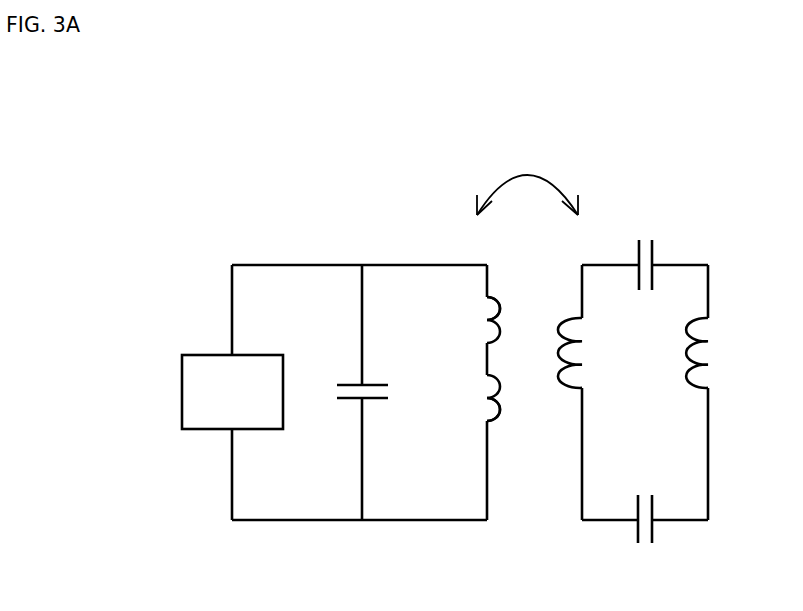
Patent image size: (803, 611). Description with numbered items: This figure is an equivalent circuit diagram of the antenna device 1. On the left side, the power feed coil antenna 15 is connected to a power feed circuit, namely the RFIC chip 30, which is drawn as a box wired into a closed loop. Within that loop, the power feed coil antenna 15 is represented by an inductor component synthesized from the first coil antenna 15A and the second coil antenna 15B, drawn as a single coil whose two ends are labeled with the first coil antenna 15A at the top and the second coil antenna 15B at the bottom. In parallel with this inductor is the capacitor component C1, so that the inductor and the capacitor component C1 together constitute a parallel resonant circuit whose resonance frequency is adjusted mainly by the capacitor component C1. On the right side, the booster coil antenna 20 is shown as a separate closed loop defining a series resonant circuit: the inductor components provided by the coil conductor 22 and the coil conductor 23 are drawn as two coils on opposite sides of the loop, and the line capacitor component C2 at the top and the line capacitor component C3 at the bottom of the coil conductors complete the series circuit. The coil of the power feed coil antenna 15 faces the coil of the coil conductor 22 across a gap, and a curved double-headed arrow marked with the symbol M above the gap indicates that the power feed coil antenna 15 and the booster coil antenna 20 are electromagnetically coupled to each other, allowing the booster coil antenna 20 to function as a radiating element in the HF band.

The antenna device 1 is at (373, 205).
The power feed coil antenna 15 is at (474, 397).
The first coil antenna 15A is at (513, 296).
The second coil antenna 15B is at (513, 421).
The booster coil antenna 20 is at (702, 243).
The coil conductor 22 is at (563, 357).
The coil conductor 23 is at (689, 357).
The RFIC chip 30 is at (182, 389).
The capacitor component C1 is at (355, 392).
The line capacitor component C2 is at (646, 251).
The line capacitor component C3 is at (645, 537).
The electromagnetic coupling M is at (527, 180).